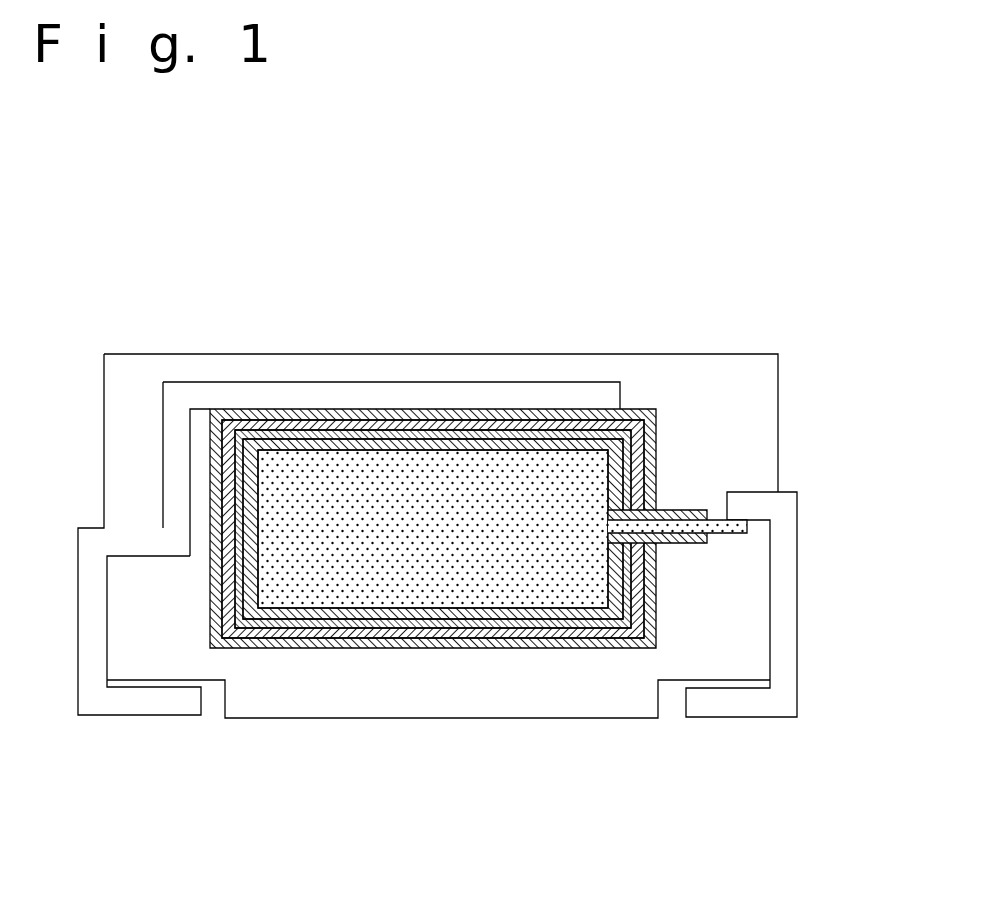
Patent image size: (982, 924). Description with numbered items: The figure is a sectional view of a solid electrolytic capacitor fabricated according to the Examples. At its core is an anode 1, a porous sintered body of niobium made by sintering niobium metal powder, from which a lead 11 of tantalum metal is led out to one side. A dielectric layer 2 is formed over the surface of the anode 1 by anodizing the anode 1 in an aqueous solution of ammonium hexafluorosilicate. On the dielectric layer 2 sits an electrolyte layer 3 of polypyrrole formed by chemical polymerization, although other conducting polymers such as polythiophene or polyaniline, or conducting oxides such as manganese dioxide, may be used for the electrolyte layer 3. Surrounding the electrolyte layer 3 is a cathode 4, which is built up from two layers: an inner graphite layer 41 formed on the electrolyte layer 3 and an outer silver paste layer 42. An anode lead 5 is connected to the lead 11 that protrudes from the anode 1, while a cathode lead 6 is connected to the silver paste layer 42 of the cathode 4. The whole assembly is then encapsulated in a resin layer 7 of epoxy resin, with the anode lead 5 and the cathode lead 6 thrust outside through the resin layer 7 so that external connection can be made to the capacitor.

The anode 1 is at (495, 578).
The dielectric layer 2 is at (568, 625).
The electrolyte layer 3 is at (445, 630).
The cathode 4 is at (433, 657).
The graphite layer 41 is at (377, 648).
The silver paste layer 42 is at (288, 648).
The anode lead 5 is at (787, 513).
The cathode lead 6 is at (355, 395).
The resin layer 7 is at (748, 405).
The lead 11 is at (718, 533).